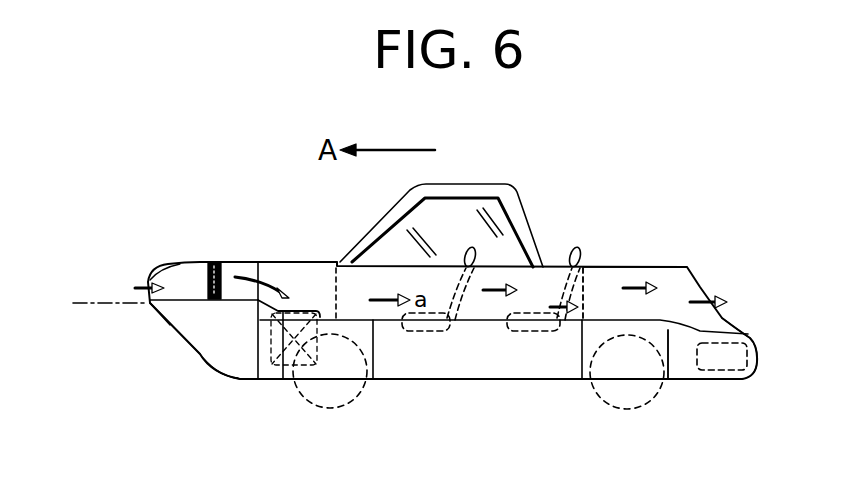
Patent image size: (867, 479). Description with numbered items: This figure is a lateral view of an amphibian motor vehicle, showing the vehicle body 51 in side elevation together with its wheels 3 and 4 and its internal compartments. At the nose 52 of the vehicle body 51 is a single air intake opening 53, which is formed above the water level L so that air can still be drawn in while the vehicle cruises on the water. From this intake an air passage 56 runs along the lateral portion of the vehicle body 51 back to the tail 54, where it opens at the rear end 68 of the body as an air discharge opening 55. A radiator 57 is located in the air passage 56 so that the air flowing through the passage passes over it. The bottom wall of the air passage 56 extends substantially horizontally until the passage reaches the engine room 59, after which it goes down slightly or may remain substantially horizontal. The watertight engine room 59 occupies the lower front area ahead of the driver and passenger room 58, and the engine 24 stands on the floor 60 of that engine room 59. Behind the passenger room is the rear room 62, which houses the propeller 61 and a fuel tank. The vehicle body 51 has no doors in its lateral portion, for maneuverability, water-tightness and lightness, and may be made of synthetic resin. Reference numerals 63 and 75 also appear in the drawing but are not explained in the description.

The wheel 3 is at (355, 398).
The wheel 4 is at (610, 408).
The engine 24 is at (262, 345).
The vehicle body 51 is at (301, 226).
The nose 52 is at (272, 261).
The air intake opening 53 is at (150, 277).
The tail 54 is at (658, 256).
The air discharge opening 55 is at (703, 296).
The air passage 56 is at (530, 292).
The radiator 57 is at (226, 262).
The driver and passenger room 58 is at (546, 207).
The engine room 59 is at (268, 372).
The floor 60 is at (283, 379).
The propeller 61 is at (723, 370).
The rear room 62 is at (685, 368).
The bow 63 is at (143, 322).
The rear end 68 is at (750, 325).
The seat 75 is at (475, 313).
The water level L is at (88, 303).